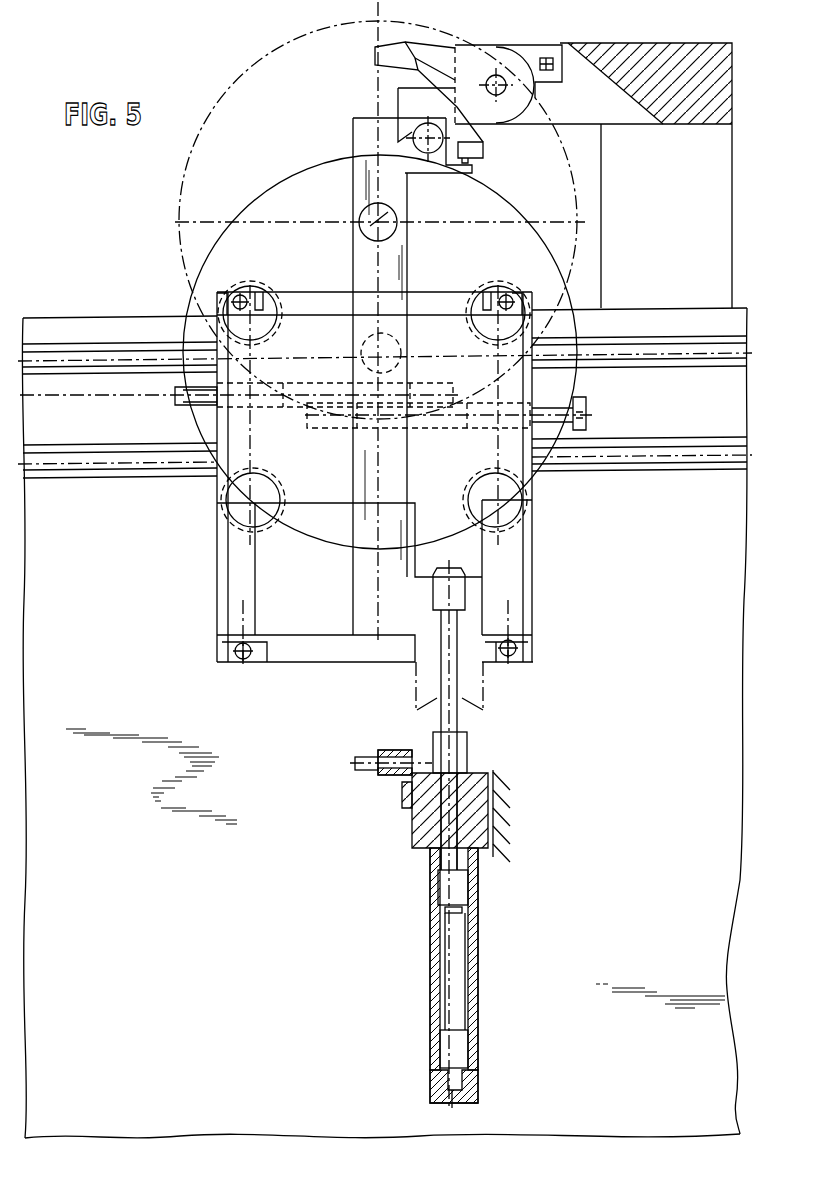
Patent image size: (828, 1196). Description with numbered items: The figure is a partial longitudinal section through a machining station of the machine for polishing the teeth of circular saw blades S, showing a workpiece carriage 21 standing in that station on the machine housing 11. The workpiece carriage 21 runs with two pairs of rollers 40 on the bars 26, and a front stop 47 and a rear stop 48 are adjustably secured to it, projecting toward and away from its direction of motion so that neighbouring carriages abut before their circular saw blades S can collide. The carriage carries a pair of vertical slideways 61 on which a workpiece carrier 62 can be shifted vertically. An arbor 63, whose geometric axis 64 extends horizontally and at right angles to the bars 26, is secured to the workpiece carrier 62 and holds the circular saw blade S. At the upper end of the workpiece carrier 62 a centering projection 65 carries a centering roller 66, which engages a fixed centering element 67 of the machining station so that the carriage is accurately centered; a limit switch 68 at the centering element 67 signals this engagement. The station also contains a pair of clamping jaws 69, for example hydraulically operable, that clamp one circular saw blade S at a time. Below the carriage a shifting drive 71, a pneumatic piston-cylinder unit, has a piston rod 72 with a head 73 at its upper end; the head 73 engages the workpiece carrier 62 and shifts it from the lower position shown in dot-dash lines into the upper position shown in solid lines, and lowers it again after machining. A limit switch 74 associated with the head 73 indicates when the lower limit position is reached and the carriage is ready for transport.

The machine housing 11 is at (168, 880).
The workpiece carriage 21 is at (304, 650).
The bars 26 is at (53, 453).
The rollers 40 is at (245, 285).
The front stop 47 is at (175, 399).
The rear stop 48 is at (586, 404).
The vertical slideways 61 is at (243, 598).
The workpiece carrier 62 is at (328, 487).
The arbor 63 is at (393, 228).
The geometric axis 64 is at (370, 226).
The centering projection 65 is at (383, 128).
The centering roller 66 is at (424, 165).
The fixed centering element 67 is at (405, 97).
The limit switch 68 is at (478, 152).
The clamping jaws 69 is at (385, 46).
The shifting drive 71 is at (390, 970).
The piston rod 72 is at (457, 718).
The head 73 is at (437, 595).
The limit switch 74 is at (389, 778).
The circular saw blade S is at (265, 56).